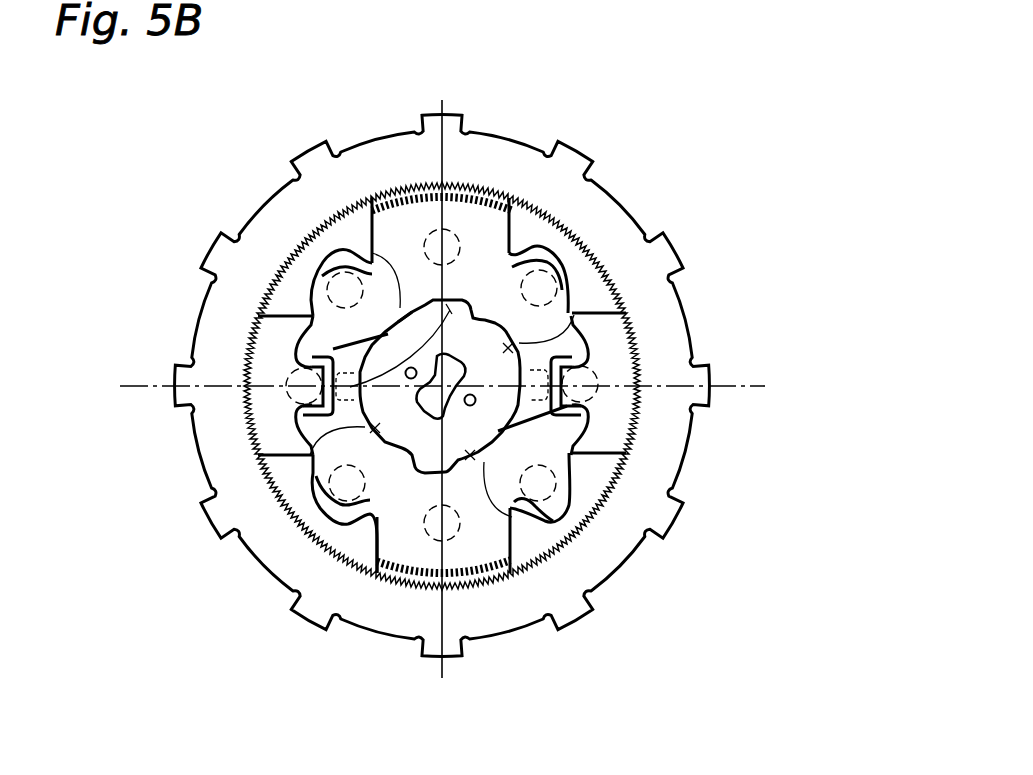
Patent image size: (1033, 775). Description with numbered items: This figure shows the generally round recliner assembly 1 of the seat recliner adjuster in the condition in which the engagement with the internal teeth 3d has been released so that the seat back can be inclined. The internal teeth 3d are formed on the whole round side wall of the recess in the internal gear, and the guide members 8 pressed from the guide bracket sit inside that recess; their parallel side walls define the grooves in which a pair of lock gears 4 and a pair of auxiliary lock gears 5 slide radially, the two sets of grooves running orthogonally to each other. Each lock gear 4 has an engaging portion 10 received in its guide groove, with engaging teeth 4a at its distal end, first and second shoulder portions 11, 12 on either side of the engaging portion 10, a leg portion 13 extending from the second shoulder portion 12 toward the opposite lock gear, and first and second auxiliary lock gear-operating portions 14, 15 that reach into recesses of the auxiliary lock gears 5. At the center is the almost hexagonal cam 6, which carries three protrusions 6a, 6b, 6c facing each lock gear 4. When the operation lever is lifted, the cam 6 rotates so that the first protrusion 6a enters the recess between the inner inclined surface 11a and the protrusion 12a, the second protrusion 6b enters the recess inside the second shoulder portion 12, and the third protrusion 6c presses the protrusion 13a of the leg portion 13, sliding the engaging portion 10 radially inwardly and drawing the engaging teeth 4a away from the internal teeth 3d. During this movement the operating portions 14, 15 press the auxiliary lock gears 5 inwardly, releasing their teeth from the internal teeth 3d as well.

The recliner assembly 1 is at (793, 57).
The internal teeth 3d is at (400, 312).
The lock gear 4 is at (430, 210).
The engaging teeth 4a is at (525, 80).
The auxiliary lock gear 5 is at (350, 387).
The cam 6 is at (555, 655).
The first protrusion 6a is at (377, 428).
The second protrusion 6b is at (507, 340).
The third protrusion 6c is at (507, 408).
The guide member 8 is at (697, 162).
The engaging portion 10 is at (574, 98).
The first shoulder portion 11 is at (335, 282).
The inner inclined surface 11a is at (347, 288).
The second shoulder portion 12 is at (731, 214).
The protrusion 12a is at (626, 132).
The leg portion 13 is at (751, 436).
The protrusion 13a is at (697, 566).
The first auxiliary lock gear-operating portion 14 is at (300, 362).
The second auxiliary lock gear-operating portion 15 is at (757, 326).